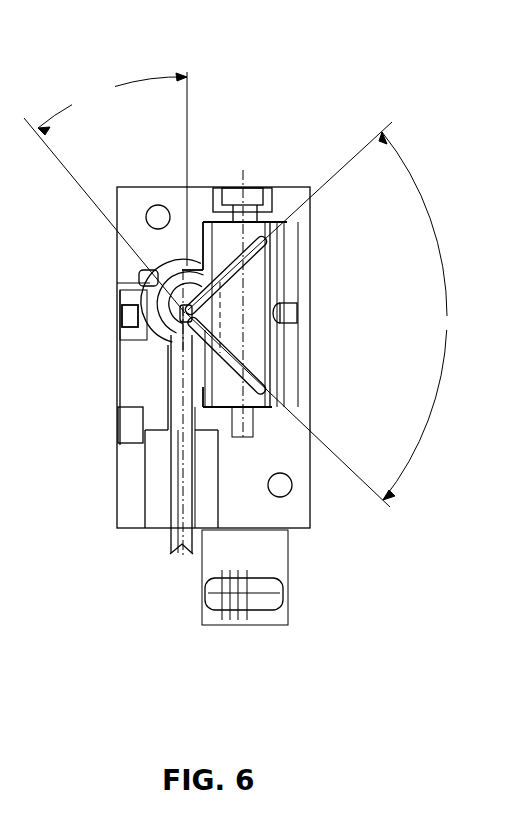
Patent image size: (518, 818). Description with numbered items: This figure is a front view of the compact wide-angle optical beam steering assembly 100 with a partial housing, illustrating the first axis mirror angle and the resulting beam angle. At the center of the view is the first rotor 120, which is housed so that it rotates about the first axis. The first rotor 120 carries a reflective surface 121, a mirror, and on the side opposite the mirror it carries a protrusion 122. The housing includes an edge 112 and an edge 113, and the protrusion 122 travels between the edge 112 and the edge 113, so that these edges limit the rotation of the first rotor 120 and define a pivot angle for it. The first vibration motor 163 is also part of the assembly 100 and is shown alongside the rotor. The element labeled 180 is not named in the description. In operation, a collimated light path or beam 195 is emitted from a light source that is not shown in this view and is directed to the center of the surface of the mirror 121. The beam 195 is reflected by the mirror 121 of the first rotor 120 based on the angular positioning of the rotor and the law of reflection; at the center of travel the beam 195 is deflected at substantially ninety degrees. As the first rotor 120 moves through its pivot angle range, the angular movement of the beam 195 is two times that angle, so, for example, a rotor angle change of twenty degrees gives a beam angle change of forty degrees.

The compact wide-angle optical beam steering assembly 100 is at (320, 92).
The edge 112 is at (195, 268).
The edge 113 is at (150, 280).
The first rotor 120 is at (122, 350).
The reflective surface 121 is at (166, 337).
The protrusion 122 is at (151, 268).
The first vibration motor 163 is at (118, 317).
The connector block 180 is at (246, 174).
The beam 195 is at (170, 538).